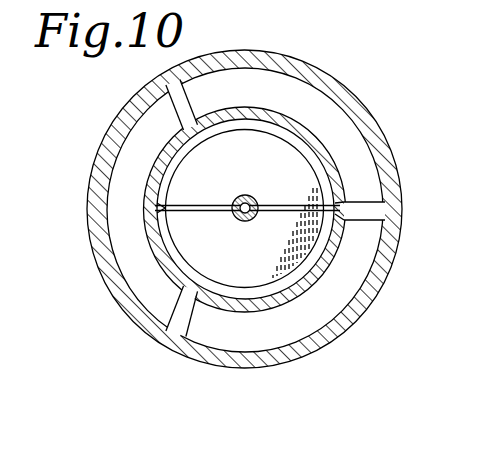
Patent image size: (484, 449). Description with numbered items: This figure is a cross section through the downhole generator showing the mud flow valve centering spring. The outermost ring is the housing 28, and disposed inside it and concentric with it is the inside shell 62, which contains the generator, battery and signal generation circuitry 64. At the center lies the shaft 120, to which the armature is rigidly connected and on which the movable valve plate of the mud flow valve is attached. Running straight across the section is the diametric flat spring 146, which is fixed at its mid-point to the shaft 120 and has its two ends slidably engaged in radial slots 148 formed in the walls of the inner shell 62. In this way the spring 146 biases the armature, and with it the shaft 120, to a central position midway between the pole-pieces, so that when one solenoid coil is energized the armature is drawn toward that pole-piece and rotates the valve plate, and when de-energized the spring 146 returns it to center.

The housing 28 is at (378, 119).
The inside shell 62 is at (265, 110).
The generator, battery and signal generation circuitry 64 is at (248, 266).
The shaft 120 is at (249, 196).
The diametric flat spring 146 is at (184, 203).
The radial slots 148 is at (347, 200).